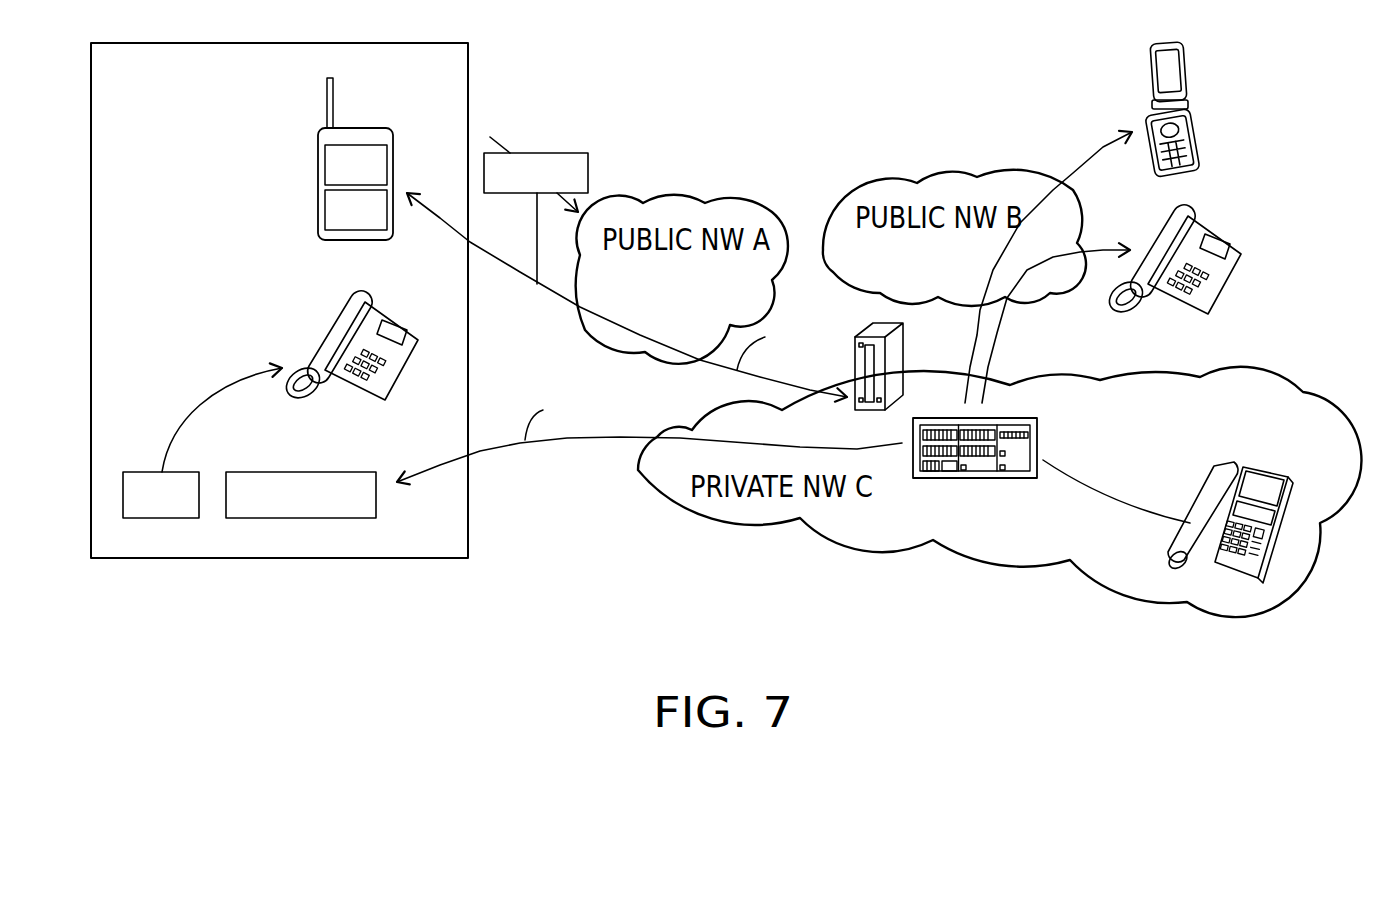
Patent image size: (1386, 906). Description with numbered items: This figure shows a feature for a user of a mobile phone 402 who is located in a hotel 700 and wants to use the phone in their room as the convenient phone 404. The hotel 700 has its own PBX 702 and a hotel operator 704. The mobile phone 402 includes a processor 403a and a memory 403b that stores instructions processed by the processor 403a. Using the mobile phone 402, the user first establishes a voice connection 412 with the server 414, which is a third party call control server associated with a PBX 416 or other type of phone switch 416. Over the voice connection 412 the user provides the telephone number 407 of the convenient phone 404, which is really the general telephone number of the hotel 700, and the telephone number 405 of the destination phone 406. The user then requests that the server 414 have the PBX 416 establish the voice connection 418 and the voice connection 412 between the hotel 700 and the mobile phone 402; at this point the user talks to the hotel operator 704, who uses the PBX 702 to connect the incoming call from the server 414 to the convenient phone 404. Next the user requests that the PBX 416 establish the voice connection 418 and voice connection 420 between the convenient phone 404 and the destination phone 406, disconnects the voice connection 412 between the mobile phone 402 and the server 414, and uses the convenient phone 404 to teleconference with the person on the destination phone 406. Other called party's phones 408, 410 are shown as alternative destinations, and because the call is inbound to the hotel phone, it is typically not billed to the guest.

The hotel 700 is at (281, 43).
The mobile phone 402 is at (370, 159).
The processor 403a is at (356, 165).
The memory 403b is at (356, 211).
The convenient phone 404 is at (362, 297).
The telephone number of the destination phone 405 is at (536, 210).
The telephone number of the convenient phone 407 is at (536, 210).
The destination phone 406 is at (1188, 98).
The called party's phone 408 is at (1252, 463).
The called party's phone 410 is at (1225, 225).
The voice connection 412 is at (765, 380).
The server 414 is at (898, 340).
The PBX 416 is at (977, 479).
The voice connection 418 is at (213, 393).
The voice connection 420 is at (1103, 153).
The PBX 702 is at (187, 472).
The hotel operator 704 is at (290, 472).